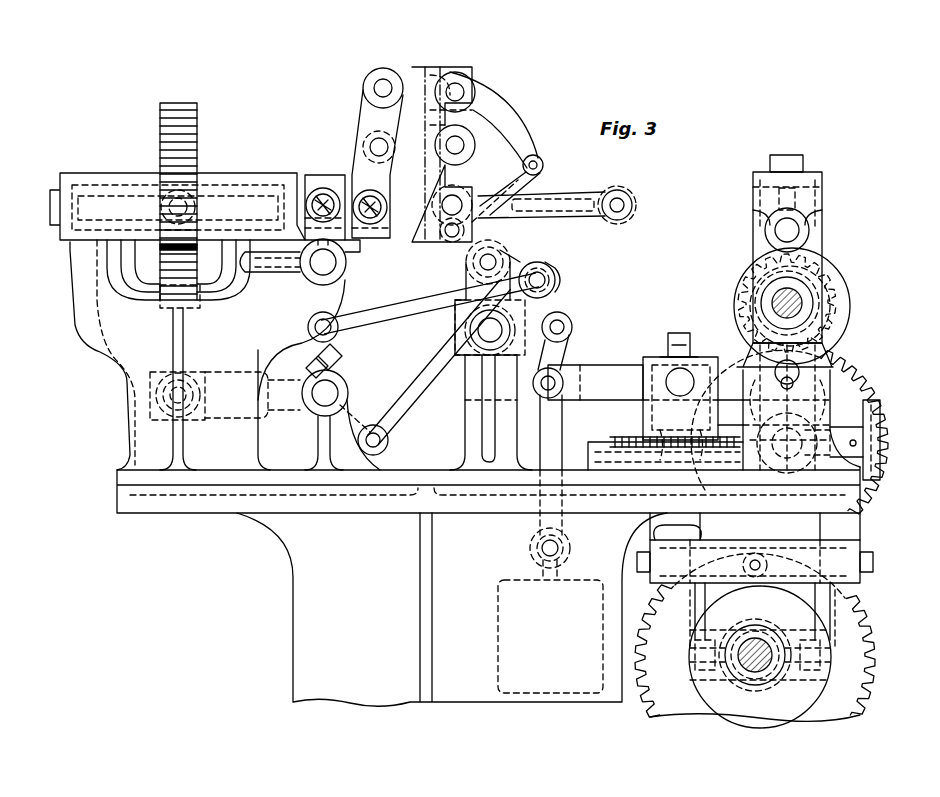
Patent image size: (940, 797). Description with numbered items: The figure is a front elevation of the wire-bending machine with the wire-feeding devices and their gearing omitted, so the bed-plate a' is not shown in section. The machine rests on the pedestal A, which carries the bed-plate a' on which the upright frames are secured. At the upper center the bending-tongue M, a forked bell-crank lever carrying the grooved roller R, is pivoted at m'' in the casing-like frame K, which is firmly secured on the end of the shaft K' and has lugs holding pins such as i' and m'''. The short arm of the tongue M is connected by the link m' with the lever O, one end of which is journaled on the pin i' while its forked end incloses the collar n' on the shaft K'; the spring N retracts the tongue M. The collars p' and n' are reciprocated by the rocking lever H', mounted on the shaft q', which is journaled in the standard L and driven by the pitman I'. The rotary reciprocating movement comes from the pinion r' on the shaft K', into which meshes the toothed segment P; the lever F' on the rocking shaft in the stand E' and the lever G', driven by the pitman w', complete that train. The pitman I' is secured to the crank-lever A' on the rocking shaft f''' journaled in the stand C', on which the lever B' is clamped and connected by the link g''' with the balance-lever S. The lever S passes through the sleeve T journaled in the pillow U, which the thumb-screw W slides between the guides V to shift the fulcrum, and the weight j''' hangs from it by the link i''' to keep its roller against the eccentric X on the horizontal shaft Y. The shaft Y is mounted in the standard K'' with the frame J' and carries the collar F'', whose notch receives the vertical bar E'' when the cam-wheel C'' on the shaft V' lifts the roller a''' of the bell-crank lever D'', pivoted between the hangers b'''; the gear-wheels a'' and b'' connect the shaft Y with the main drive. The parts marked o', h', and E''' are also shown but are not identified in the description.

The toothed segment P is at (178, 190).
The pinion r' is at (189, 207).
The rocking lever H' is at (323, 191).
The collar p' is at (339, 199).
The shaft K' is at (381, 209).
The shaft q' is at (293, 262).
The collar n' is at (366, 251).
The lever O is at (377, 164).
The pin i' is at (383, 88).
The link m' is at (389, 148).
The frame K is at (442, 154).
The frame J' is at (643, 207).
The spring N is at (495, 140).
The link o' is at (511, 185).
The bending-tongue M is at (538, 201).
The grooved roller R is at (628, 217).
The pivot m'' is at (452, 205).
The pin m''' is at (460, 239).
The crank-lever A' is at (527, 261).
The pivot h' is at (323, 318).
The pitman I' is at (430, 303).
The rocking shaft f''' is at (490, 327).
The lever B' is at (550, 327).
The link g''' is at (571, 351).
The balance-lever S is at (588, 382).
The link i''' is at (550, 487).
The lever F' is at (276, 381).
The lever G' is at (364, 430).
The pitman w' is at (439, 363).
The stand E' is at (319, 375).
The standard L is at (177, 321).
The stand C' is at (491, 412).
The sleeve T is at (680, 396).
The pillow U is at (675, 426).
The guides V is at (665, 456).
The vertical bar E'' is at (730, 411).
The horizontal shaft Y is at (787, 303).
The eccentric X is at (848, 300).
The collar F'' is at (810, 293).
The roller a''' is at (789, 413).
The standard K'' is at (800, 408).
The thumb-screw W is at (872, 405).
The bed-plate a' is at (488, 490).
The pedestal A is at (452, 609).
The weight j''' is at (550, 636).
The bracket E''' is at (755, 525).
The hangers b''' is at (748, 561).
The gear-wheel b'' is at (877, 551).
The gear-wheel a'' is at (751, 564).
The bell-crank lever D'' is at (769, 637).
The cam-wheel C'' is at (760, 657).
The shaft V' is at (760, 655).